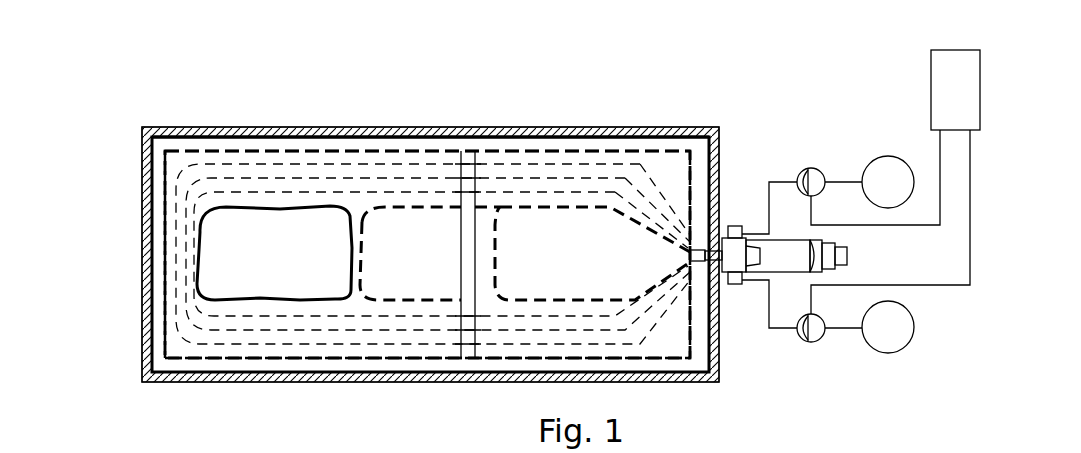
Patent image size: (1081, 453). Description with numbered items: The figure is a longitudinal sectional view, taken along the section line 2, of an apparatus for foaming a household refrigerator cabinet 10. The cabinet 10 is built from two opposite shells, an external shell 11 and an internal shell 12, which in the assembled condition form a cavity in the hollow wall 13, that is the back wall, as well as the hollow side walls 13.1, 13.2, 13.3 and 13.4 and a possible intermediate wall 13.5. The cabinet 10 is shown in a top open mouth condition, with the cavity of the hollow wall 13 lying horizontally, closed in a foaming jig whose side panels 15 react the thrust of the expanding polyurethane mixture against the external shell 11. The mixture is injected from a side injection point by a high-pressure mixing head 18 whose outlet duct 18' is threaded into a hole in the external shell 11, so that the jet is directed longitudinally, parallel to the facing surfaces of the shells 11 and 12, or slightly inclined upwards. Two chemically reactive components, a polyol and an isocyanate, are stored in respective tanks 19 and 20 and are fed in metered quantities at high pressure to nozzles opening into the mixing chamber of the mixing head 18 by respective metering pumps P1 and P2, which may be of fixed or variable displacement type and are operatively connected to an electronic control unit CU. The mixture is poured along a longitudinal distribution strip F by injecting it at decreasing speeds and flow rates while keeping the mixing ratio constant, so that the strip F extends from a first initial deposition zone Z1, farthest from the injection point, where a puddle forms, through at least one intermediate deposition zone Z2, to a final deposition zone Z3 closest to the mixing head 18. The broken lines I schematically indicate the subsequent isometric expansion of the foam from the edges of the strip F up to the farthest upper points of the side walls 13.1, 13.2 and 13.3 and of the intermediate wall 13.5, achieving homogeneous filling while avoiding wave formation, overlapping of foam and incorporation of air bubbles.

The refrigerator cabinet 10 is at (429, 98).
The external shell 11 is at (370, 137).
The internal shell 12 is at (235, 151).
The hollow wall 13 is at (580, 168).
The hollow side wall 13.1 is at (165, 164).
The hollow side wall 13.2 is at (640, 383).
The hollow side wall 13.3 is at (698, 165).
The hollow side wall 13.4 is at (635, 152).
The intermediate wall 13.5 is at (486, 165).
The side panels 15 is at (293, 127).
The mixing head 18 is at (784, 326).
The outlet duct 18' is at (730, 311).
The tank 19 is at (888, 156).
The tank 20 is at (890, 353).
The broken lines indicating isometric foam expansion I is at (533, 170).
The longitudinal distribution strip F is at (300, 282).
The first initial deposition zone Z1 is at (243, 263).
The intermediate deposition zone Z2 is at (406, 263).
The final deposition zone Z3 is at (568, 263).
The metering pump P1 is at (841, 182).
The metering pump P2 is at (856, 248).
The electronic control unit CU is at (955, 90).
The section line of the cross-sectional view 2 is at (78, 222).